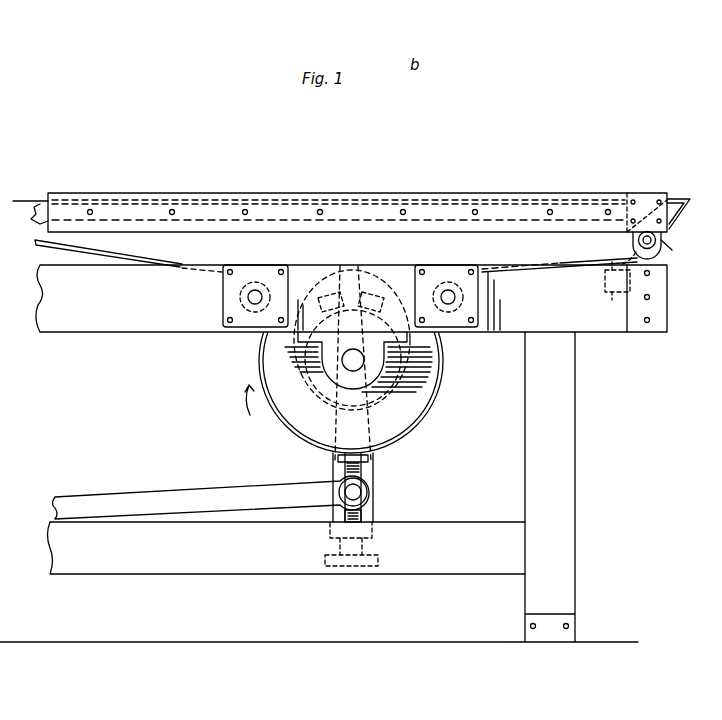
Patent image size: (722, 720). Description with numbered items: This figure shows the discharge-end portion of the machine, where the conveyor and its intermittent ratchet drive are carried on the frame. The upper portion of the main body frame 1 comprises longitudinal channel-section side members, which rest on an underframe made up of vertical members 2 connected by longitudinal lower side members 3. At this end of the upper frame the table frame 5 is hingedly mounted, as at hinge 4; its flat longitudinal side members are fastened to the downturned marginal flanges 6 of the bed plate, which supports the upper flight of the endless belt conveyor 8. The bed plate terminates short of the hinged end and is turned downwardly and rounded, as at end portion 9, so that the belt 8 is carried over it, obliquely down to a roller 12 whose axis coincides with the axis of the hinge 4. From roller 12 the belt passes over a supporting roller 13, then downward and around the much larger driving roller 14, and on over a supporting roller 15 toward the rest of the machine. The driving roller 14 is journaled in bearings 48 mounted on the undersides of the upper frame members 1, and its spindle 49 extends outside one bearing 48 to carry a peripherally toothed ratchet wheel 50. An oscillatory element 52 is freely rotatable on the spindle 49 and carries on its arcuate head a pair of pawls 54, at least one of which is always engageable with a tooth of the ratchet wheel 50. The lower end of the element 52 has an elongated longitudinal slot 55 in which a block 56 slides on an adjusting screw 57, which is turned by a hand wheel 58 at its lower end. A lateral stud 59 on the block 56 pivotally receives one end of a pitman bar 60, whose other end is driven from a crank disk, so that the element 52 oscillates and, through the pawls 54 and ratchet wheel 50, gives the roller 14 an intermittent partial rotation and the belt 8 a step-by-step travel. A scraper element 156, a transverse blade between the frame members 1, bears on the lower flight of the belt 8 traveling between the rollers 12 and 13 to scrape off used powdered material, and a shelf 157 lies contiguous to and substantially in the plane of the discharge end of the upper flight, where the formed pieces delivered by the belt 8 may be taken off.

The upper portion of the main body frame 1 is at (133, 332).
The vertical members 2 is at (565, 465).
The longitudinal lower side members 3 is at (233, 570).
The hinge 4 is at (657, 240).
The table frame 5 is at (333, 193).
The downturned marginal flanges 6 is at (34, 218).
The endless belt conveyor 8 is at (18, 200).
The downturned and rounded end portion of the bed plate 9 is at (617, 204).
The roller 12 is at (665, 247).
The supporting roller 13 is at (478, 299).
The driving roller 14 is at (433, 357).
The supporting roller 15 is at (223, 298).
The bearings 48 is at (310, 352).
The spindle 49 is at (353, 362).
The ratchet wheel 50 is at (440, 393).
The oscillatory element 52 is at (375, 458).
The pawls 54 is at (358, 266).
The elongated longitudinal slot 55 is at (362, 520).
The block 56 is at (333, 480).
The adjusting screw 57 is at (335, 458).
The hand wheel 58 is at (366, 572).
The lateral stud 59 is at (356, 492).
The pitman bar 60 is at (177, 492).
The scraper element 156 is at (655, 275).
The shelf 157 is at (675, 196).